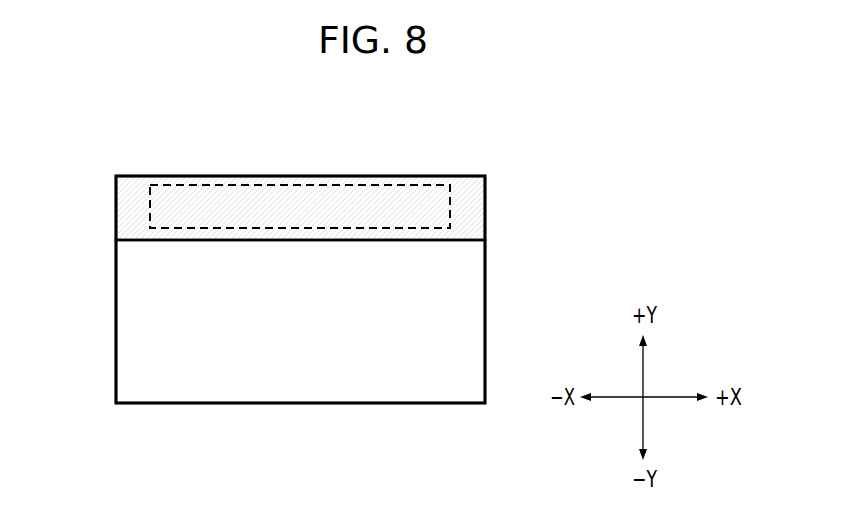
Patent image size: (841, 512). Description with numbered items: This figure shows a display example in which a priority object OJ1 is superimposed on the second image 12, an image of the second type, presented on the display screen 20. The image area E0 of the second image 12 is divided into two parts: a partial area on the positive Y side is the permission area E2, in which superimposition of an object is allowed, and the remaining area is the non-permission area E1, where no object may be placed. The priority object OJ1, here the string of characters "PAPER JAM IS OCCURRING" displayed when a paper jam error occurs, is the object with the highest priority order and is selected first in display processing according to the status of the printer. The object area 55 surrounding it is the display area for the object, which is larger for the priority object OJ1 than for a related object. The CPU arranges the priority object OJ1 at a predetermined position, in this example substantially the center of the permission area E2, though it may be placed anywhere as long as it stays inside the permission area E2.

The second image 12 is at (517, 204).
The display screen 20 is at (486, 343).
The object area 55 is at (288, 185).
The priority object OJ1 is at (404, 178).
The image area E0 is at (243, 289).
The non-permission area E1 is at (276, 321).
The permission area E2 is at (116, 208).